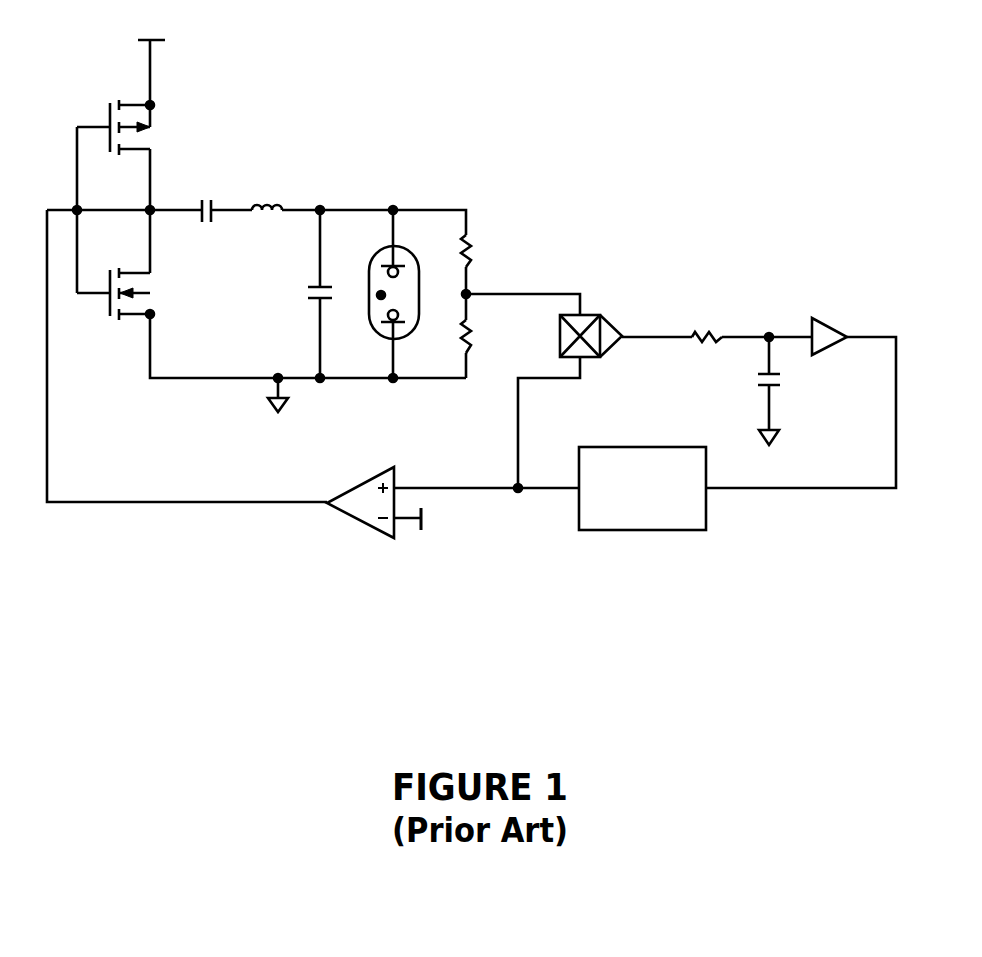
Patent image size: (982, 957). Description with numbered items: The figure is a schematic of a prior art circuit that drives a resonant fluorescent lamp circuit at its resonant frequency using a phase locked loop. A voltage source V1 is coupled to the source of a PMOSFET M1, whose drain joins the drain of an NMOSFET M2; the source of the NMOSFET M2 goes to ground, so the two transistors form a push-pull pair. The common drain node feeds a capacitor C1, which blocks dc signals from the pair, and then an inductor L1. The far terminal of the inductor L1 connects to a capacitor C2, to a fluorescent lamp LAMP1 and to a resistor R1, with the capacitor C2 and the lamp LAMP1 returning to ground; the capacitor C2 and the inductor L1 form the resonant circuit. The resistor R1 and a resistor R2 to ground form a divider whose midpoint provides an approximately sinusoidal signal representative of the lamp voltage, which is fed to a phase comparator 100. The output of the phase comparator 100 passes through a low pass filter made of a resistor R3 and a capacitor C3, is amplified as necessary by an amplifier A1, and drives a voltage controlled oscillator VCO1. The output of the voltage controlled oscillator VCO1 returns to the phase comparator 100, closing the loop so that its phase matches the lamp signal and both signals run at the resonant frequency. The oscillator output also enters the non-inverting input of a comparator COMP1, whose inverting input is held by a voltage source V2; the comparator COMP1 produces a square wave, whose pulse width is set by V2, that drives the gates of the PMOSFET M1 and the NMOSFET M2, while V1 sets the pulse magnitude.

The voltage source V1 is at (152, 66).
The PMOSFET M1 is at (139, 127).
The NMOSFET M2 is at (139, 294).
The capacitor C1 is at (204, 194).
The inductor L1 is at (267, 191).
The capacitor C2 is at (299, 296).
The fluorescent lamp LAMP1 is at (407, 242).
The resistor R1 is at (485, 253).
The resistor R2 is at (486, 338).
The phase comparator 100 is at (608, 311).
The resistor R3 is at (707, 321).
The capacitor C3 is at (748, 379).
The amplifier A1 is at (837, 328).
The voltage controlled oscillator VCO1 is at (642, 488).
The comparator COMP1 is at (325, 498).
The voltage source V2 is at (441, 521).